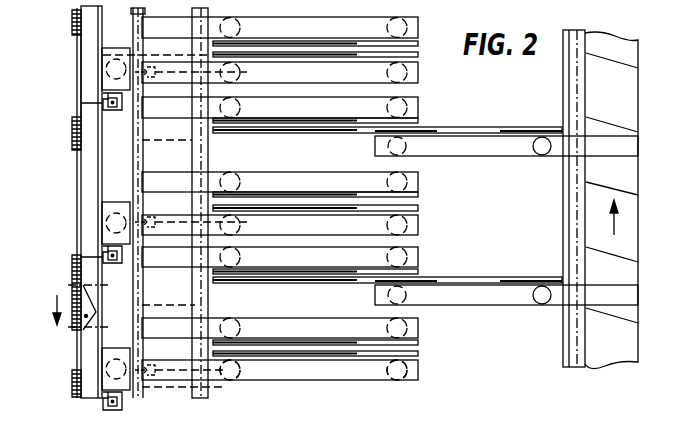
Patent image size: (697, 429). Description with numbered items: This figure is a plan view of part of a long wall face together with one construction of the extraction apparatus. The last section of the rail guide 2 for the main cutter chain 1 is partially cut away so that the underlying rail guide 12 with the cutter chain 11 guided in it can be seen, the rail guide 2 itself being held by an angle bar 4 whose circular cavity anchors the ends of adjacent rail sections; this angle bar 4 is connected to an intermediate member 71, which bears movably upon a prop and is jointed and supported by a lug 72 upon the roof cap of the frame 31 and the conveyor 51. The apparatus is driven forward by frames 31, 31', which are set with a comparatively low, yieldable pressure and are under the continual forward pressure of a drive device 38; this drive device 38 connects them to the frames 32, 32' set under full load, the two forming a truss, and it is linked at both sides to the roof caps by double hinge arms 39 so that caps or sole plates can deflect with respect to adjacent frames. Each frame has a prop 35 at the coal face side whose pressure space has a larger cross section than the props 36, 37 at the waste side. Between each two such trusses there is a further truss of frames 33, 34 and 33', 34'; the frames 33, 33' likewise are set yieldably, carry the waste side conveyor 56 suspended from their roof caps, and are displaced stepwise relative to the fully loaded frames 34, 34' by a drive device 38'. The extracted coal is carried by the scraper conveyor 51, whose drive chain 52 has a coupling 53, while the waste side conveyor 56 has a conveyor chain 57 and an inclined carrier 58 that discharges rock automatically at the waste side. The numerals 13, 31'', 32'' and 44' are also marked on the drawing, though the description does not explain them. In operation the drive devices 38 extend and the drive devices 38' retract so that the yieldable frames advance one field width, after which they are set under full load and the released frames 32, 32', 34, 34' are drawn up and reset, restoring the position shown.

The main cutter chain 1 is at (72, 141).
The rail guide 2 is at (89, 176).
The angle bar 4 is at (105, 110).
The cutter chain 11 is at (78, 292).
The rail guide 12 is at (100, 296).
The rack section 13 is at (80, 336).
The prop 35 is at (113, 374).
The prop 36 is at (232, 375).
The prop 37 is at (393, 373).
The drive device 38 is at (336, 213).
The double hinge arms 39 is at (418, 355).
The scraper conveyor 51 is at (140, 398).
The drive chain 52 is at (206, 398).
The coupling 53 is at (186, 303).
The waste side conveyor 56 is at (622, 44).
The conveyor chain 57 is at (578, 28).
The carrier 58 is at (605, 60).
The intermediate member 71 is at (102, 50).
The lug 72 is at (38, 7).
The frame 31 is at (280, 385).
The frame 32 is at (280, 316).
The frame 33 is at (455, 214).
The frame 34 is at (280, 278).
The frame 31' is at (304, 224).
The frame 32' is at (280, 171).
The frame 33' is at (506, 158).
The frame 34' is at (280, 126).
The drive device 38' is at (387, 200).
The lower arm 31'' is at (303, 72).
The upper arm 32'' is at (280, 19).
The member 44' is at (383, 423).